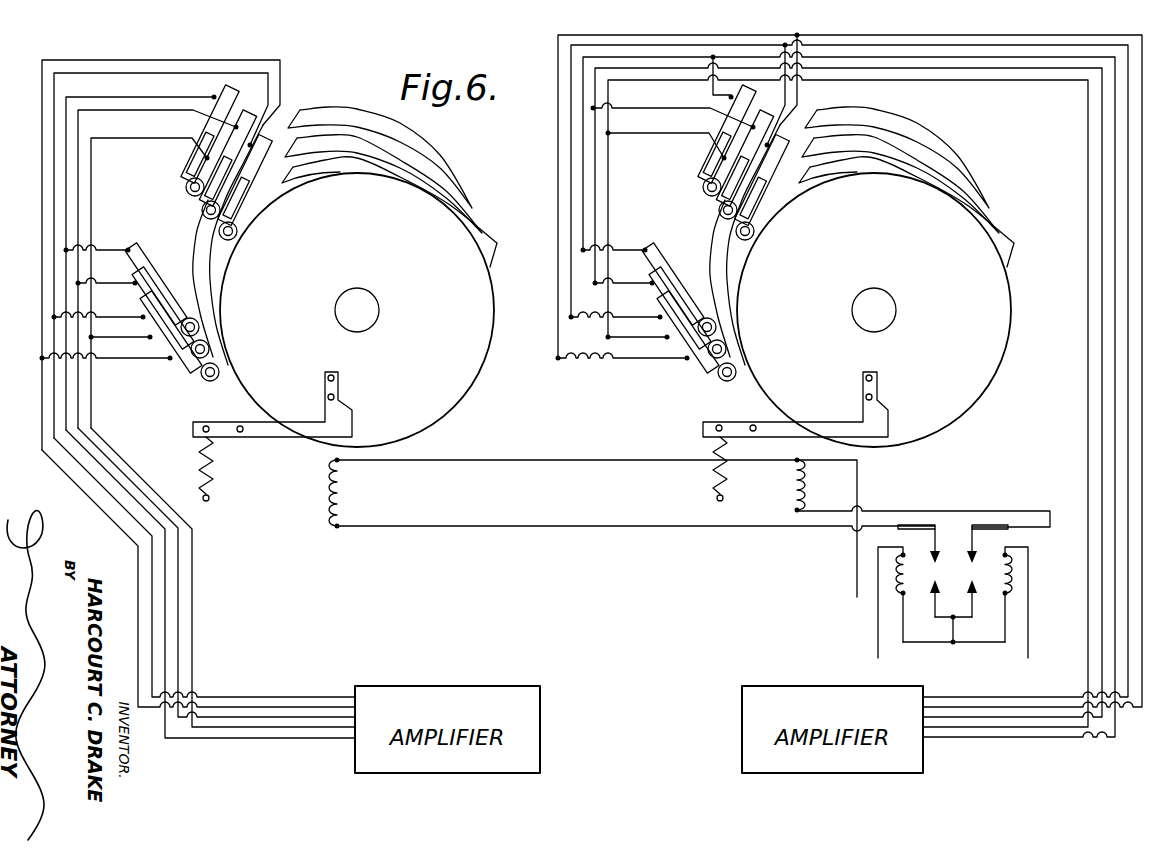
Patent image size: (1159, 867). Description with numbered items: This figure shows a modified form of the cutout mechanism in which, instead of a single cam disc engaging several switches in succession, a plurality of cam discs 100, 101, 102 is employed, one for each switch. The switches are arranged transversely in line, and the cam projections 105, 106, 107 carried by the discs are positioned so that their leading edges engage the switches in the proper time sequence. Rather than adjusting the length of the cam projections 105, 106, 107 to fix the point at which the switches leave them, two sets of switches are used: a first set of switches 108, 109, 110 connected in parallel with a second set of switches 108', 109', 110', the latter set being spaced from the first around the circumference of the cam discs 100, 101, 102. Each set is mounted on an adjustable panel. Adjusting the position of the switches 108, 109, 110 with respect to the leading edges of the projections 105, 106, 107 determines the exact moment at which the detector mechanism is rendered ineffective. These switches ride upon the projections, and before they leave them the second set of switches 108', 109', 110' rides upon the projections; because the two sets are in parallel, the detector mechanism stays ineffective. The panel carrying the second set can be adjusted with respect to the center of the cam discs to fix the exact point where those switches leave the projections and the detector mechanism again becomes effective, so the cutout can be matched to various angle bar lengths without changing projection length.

The cam disc 100 is at (462, 385).
The cam disc 101 is at (213, 252).
The cam disc 102 is at (208, 238).
The cam projection 105 is at (487, 232).
The cam projection 106 is at (455, 180).
The cam projection 107 is at (428, 148).
The switch 108 is at (520, 187).
The switch 109 is at (460, 169).
The switch 110 is at (444, 146).
The switch 108' is at (469, 353).
The switch 109' is at (464, 312).
The switch 110' is at (457, 289).